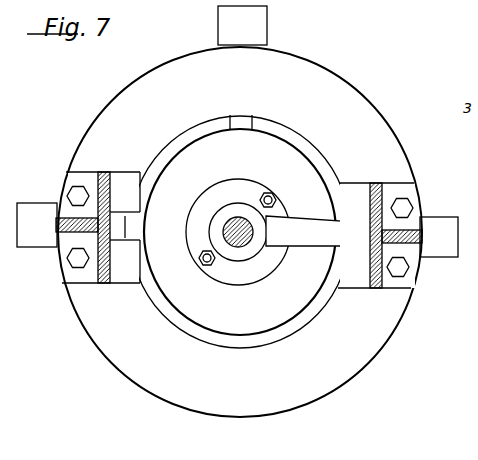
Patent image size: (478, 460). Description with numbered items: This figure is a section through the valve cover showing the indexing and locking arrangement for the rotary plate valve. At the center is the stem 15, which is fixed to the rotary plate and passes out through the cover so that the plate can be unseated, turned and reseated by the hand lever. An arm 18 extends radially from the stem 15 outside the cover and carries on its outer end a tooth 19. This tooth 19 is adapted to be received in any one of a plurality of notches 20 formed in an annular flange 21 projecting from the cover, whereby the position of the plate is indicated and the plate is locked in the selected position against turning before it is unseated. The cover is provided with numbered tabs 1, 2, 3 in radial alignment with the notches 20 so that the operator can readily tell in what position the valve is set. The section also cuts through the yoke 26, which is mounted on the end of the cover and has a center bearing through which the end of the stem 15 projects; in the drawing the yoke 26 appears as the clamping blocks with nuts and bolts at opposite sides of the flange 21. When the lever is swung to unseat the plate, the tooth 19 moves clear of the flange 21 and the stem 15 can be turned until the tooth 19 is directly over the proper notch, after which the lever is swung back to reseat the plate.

The position tab 1 is at (37, 225).
The position tab 2 is at (242, 25).
The position tab 3 is at (439, 237).
The stem 15 is at (240, 214).
The arm 18 is at (308, 249).
The tooth 19 is at (347, 247).
The notches 20 is at (244, 120).
The annular flange 21 is at (298, 322).
The yoke 26 is at (90, 272).